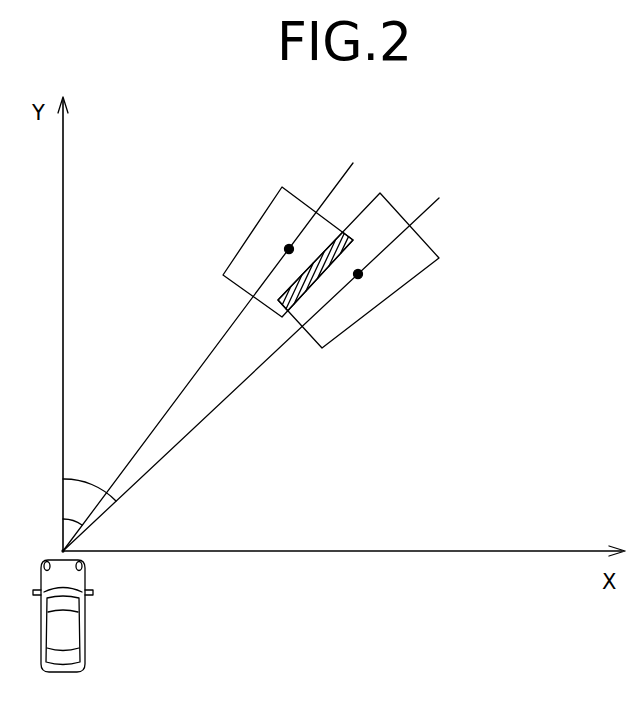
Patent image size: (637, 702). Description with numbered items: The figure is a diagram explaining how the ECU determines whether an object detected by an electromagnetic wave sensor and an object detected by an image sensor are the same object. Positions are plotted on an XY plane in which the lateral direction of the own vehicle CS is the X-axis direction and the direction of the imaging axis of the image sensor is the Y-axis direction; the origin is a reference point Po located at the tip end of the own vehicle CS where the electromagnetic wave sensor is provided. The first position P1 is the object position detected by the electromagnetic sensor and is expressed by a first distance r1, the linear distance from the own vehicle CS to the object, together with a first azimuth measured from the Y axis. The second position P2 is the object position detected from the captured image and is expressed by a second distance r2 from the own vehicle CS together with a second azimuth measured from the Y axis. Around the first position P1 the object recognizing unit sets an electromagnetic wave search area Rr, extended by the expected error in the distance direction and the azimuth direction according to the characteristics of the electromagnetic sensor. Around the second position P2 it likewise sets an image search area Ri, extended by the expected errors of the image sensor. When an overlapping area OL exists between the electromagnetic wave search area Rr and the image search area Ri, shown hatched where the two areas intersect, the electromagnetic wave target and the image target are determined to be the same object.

The reference point Po is at (40, 542).
The first distance r1 is at (208, 357).
The second distance r2 is at (251, 374).
The electromagnetic wave search area Rr is at (300, 200).
The image search area Ri is at (427, 237).
The overlapping area OL is at (338, 241).
The first position P1 is at (289, 249).
The second position P2 is at (358, 274).
The own vehicle CS is at (85, 617).